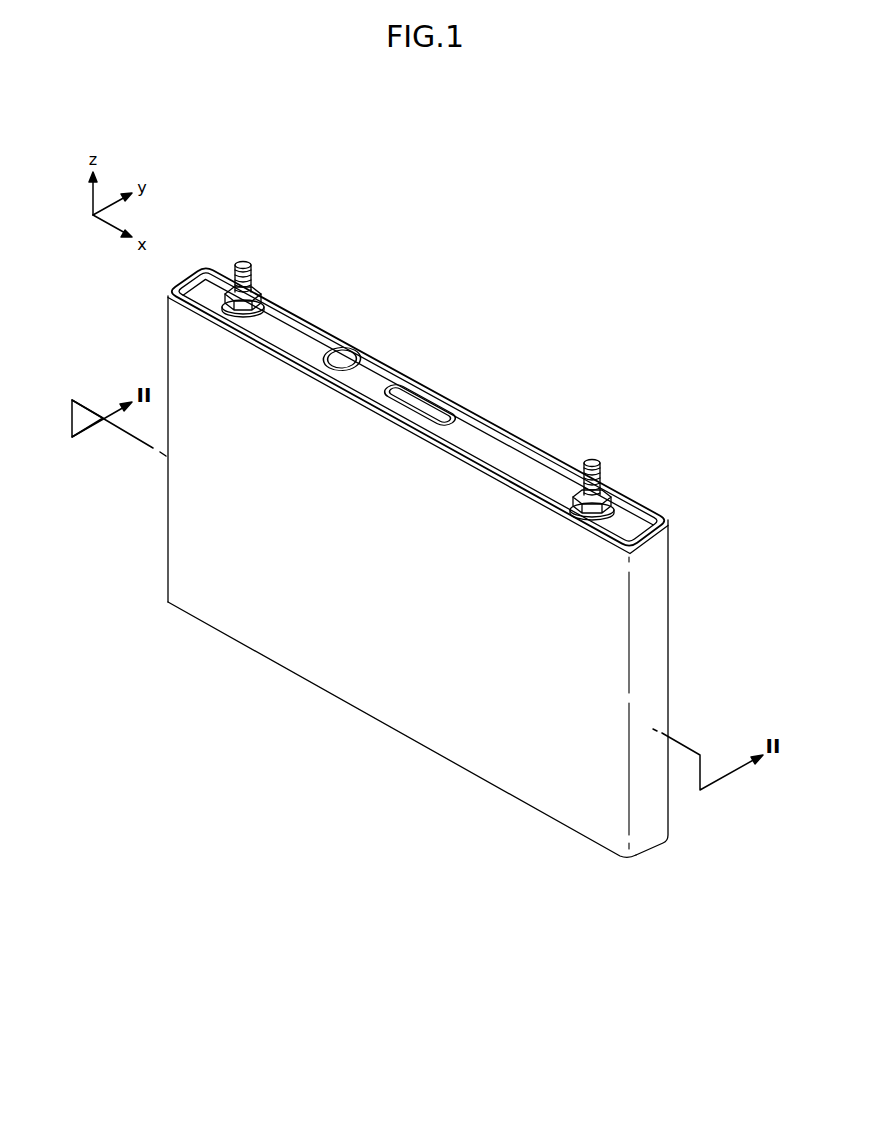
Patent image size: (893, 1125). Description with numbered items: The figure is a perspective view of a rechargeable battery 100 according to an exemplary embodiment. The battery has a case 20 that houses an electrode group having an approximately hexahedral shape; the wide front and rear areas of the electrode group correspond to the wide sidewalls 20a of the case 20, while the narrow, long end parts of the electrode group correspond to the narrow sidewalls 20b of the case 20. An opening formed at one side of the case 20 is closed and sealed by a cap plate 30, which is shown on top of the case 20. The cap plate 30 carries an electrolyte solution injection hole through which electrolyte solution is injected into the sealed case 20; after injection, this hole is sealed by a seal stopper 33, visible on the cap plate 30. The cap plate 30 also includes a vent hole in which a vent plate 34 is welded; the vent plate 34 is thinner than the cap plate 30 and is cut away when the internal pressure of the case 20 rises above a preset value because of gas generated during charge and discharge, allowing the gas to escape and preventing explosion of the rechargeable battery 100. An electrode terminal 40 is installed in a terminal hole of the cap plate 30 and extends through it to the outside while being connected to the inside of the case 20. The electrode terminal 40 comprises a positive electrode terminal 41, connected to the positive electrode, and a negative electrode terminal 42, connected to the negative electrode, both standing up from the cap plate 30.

The rechargeable battery 100 is at (557, 320).
The case 20 is at (582, 897).
The sidewalls of the case 20a is at (602, 830).
The sidewalls of the case 20b is at (653, 828).
The cap plate 30 is at (377, 375).
The seal stopper 33 is at (342, 357).
The vent plate 34 is at (418, 405).
The electrode terminal 40 is at (451, 351).
The positive electrode terminal 41 is at (243, 264).
The negative electrode terminal 42 is at (593, 461).